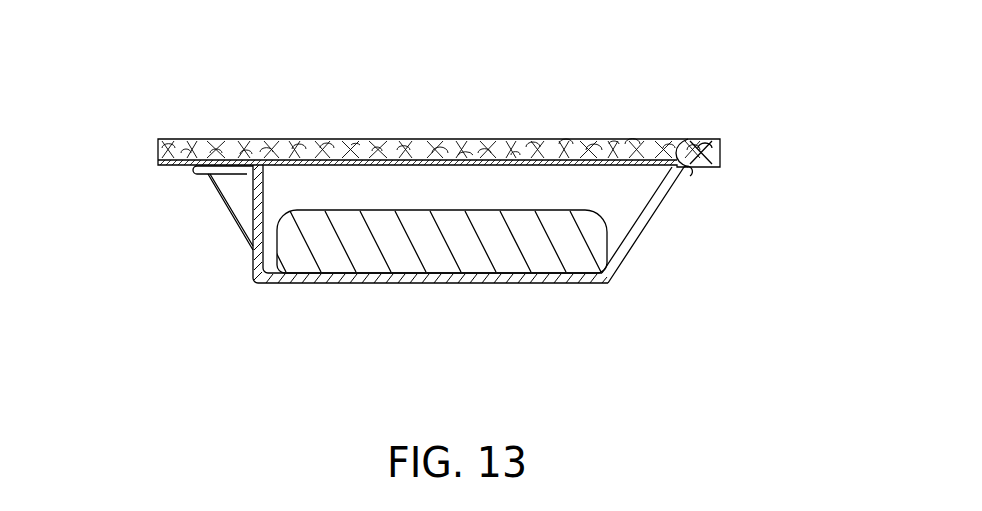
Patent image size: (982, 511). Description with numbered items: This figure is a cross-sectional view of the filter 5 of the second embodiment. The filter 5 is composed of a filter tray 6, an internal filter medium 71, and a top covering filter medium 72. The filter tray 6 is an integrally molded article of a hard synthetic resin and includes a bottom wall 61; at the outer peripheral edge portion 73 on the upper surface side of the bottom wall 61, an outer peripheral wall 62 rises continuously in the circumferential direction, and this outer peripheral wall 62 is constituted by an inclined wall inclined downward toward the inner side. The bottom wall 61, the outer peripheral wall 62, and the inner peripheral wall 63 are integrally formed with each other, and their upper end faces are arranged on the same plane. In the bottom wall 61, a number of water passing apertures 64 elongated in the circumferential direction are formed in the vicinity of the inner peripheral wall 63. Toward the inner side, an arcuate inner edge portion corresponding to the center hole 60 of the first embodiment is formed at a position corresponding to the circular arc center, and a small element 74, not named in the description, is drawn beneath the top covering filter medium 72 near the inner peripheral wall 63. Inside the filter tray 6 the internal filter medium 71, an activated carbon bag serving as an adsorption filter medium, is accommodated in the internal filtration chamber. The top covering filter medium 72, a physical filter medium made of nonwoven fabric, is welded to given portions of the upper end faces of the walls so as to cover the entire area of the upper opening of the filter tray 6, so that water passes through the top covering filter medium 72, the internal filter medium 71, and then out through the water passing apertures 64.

The filter 5 is at (620, 91).
The filter tray 6 is at (640, 256).
The center hole 60 is at (222, 230).
The bottom wall 61 is at (530, 285).
The outer peripheral wall 62 is at (657, 211).
The inner peripheral wall 63 is at (253, 203).
The water passing aperture 64 is at (388, 285).
The internal filter medium 71 is at (453, 234).
The top covering filter medium 72 is at (342, 127).
The outer peripheral edge portion 73 is at (724, 139).
The tab 74 is at (226, 164).